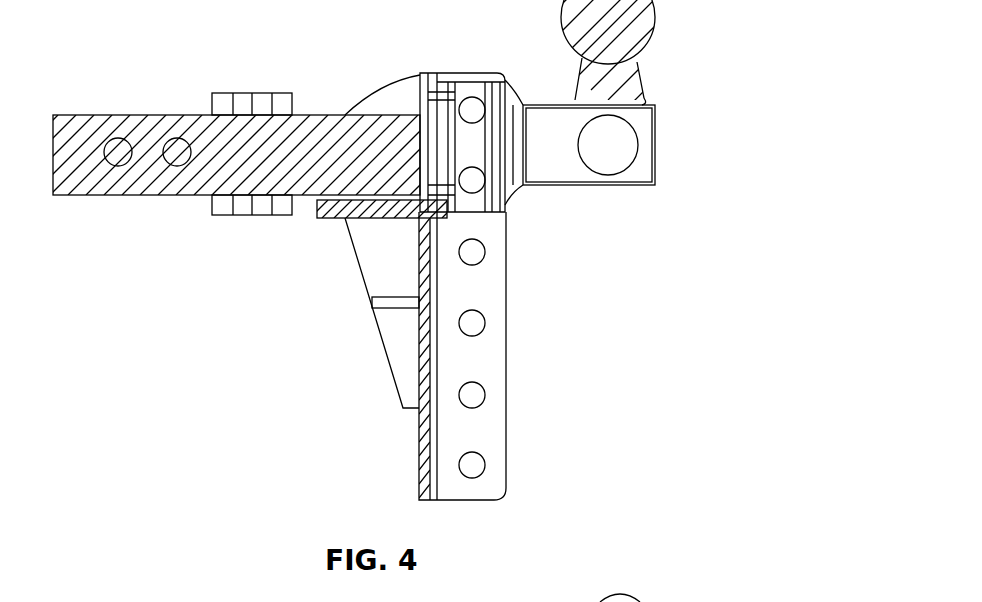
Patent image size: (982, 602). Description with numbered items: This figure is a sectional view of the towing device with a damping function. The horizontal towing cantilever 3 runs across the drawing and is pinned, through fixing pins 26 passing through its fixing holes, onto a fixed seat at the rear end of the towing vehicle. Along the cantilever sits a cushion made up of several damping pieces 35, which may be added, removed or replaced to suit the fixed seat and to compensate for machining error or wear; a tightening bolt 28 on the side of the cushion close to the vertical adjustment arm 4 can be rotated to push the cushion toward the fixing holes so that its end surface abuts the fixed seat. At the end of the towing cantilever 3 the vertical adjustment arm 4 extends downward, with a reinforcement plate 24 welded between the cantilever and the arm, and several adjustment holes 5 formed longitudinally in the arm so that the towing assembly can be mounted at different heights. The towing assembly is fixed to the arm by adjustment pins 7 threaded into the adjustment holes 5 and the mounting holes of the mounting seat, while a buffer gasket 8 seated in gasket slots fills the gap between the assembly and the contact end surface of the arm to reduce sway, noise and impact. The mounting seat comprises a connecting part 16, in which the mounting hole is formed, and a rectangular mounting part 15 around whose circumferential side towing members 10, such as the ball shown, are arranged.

The towing cantilever 3 is at (321, 115).
The vertical adjustment arm 4 is at (500, 287).
The adjustment holes 5 is at (475, 324).
The adjustment pins 7 is at (474, 108).
The buffer gasket 8 is at (436, 94).
The towing members 10 is at (648, 32).
The mounting part 15 is at (634, 185).
The connecting part 16 is at (487, 190).
The reinforcement plate 24 is at (372, 277).
The fixing pins 26 is at (118, 140).
The tightening bolt 28 is at (345, 216).
The damping pieces 35 is at (283, 97).